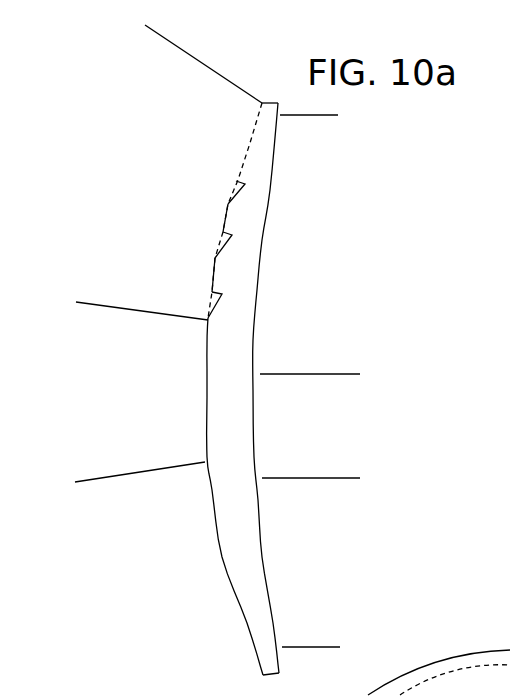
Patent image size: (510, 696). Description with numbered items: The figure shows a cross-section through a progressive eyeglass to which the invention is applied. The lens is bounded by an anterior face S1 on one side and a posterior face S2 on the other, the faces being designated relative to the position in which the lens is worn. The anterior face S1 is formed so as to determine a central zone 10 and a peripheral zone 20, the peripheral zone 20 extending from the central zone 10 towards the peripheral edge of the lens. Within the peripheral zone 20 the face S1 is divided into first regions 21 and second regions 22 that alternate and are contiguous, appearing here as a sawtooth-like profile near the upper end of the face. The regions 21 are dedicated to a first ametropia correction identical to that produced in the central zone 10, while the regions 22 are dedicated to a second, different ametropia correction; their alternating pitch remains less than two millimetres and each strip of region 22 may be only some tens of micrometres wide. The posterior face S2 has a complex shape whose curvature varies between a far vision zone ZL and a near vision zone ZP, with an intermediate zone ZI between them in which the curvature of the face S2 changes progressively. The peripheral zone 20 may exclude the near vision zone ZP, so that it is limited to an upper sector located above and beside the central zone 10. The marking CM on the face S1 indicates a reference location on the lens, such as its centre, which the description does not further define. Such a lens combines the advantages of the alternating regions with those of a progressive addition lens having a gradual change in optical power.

The central zone 10 is at (80, 302).
The peripheral zone 20 is at (148, 30).
The first regions 21 is at (228, 204).
The second regions 22 is at (237, 182).
The center of mass / middle point CM is at (218, 392).
The anterior face S1 is at (217, 560).
The posterior face S2 is at (266, 560).
The far vision zone ZL is at (329, 115).
The intermediate zone ZI is at (347, 374).
The near vision zone ZP is at (332, 478).